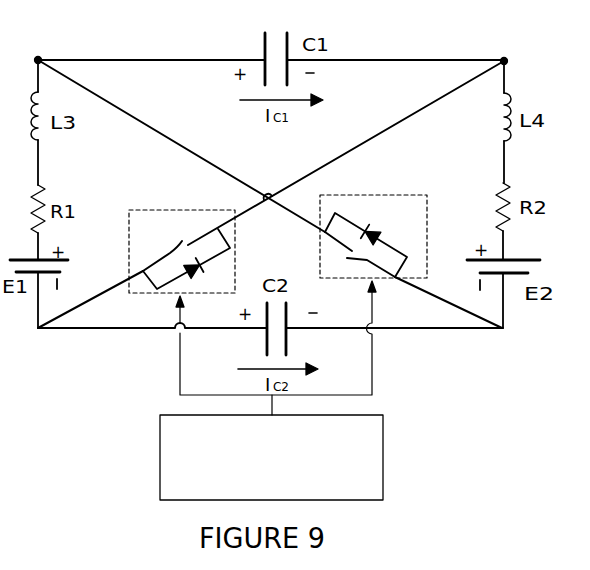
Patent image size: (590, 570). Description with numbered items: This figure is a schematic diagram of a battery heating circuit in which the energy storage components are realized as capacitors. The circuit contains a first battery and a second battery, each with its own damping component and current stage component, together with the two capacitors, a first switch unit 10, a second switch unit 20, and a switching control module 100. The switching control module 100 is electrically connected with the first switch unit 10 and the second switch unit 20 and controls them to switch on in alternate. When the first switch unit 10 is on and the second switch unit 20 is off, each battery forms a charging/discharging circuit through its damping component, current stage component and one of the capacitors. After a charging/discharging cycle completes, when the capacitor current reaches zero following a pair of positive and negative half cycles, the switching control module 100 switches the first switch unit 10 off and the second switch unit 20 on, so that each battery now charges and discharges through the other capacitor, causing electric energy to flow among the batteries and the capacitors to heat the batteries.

The first switch unit 10 is at (182, 251).
The second switch unit 20 is at (373, 236).
The switching control module 100 is at (271, 457).